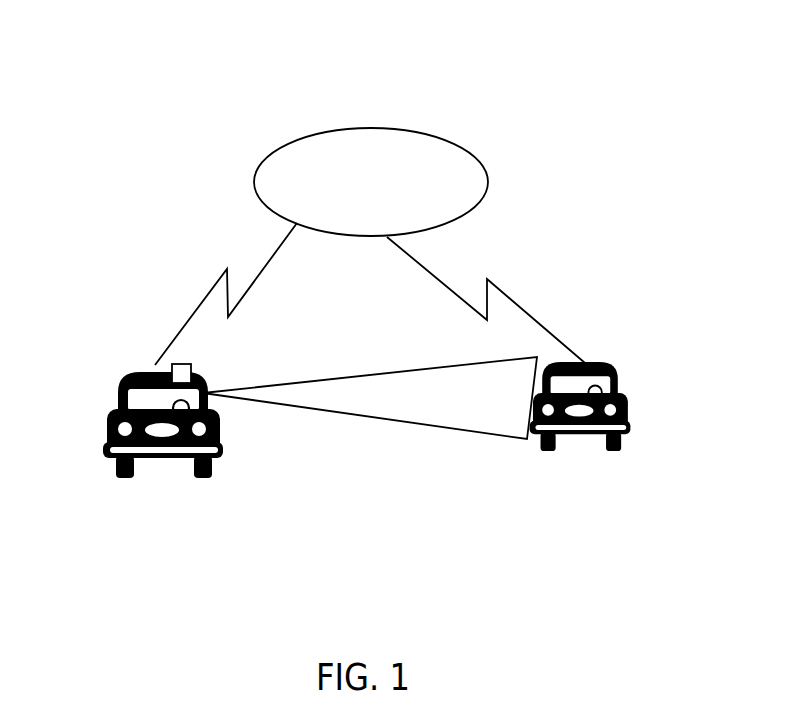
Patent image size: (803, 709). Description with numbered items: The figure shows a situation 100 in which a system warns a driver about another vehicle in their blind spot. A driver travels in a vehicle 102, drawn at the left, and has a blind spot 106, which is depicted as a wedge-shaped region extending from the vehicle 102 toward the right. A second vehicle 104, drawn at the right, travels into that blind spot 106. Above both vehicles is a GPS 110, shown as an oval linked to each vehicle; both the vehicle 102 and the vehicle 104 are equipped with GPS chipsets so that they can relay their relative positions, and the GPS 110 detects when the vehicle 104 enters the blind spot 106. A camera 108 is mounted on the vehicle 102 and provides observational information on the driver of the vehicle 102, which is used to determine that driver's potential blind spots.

The situation 100 is at (219, 143).
The vehicle 102 is at (112, 418).
The vehicle 104 is at (627, 408).
The blind spot 106 is at (457, 430).
The camera 108 is at (198, 369).
The GPS 110 is at (475, 157).